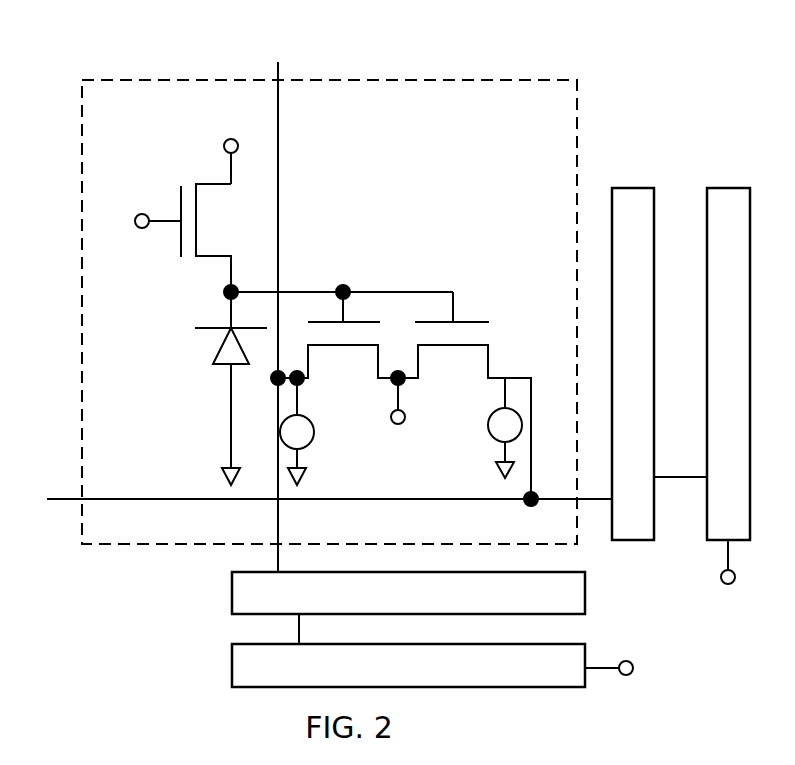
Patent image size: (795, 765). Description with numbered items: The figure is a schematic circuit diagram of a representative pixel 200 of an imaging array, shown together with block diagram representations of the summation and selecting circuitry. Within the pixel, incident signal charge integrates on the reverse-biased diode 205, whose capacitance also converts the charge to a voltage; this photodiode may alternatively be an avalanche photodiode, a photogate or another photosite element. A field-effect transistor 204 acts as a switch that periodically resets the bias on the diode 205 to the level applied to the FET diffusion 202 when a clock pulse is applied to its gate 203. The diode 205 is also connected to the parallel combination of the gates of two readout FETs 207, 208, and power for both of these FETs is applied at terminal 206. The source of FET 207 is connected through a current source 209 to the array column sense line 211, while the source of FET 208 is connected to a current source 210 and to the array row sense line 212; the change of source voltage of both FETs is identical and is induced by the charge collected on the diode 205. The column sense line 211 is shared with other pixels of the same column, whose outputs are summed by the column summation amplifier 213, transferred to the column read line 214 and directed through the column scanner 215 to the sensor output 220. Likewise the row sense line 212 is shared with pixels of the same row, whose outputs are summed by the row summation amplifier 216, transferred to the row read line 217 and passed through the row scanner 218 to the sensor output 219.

The pixel 200 is at (145, 72).
The FET diffusion 202 is at (231, 139).
The gate 203 is at (142, 214).
The field-effect transistor 204 is at (201, 228).
The diode 205 is at (204, 339).
The power terminal 206 is at (398, 424).
The FET 207 is at (343, 357).
The FET 208 is at (451, 359).
The current source 209 is at (313, 439).
The current source 210 is at (489, 428).
The column sense line 211 is at (279, 246).
The row sense line 212 is at (497, 500).
The column summation amplifier 213 is at (232, 602).
The column read line 214 is at (305, 629).
The column scanner 215 is at (232, 668).
The row summation amplifier 216 is at (636, 188).
The row read line 217 is at (678, 490).
The row scanner 218 is at (730, 188).
The sensor output 219 is at (728, 584).
The sensor output 220 is at (632, 664).